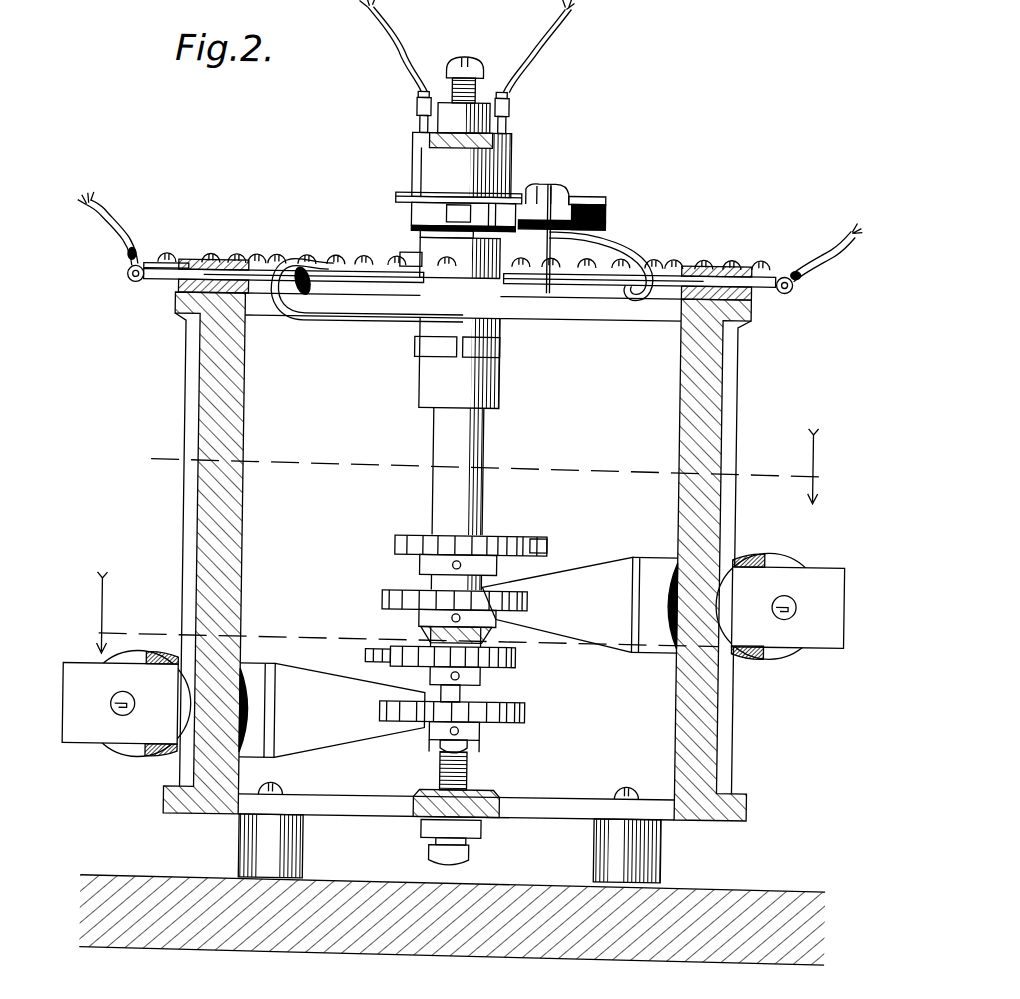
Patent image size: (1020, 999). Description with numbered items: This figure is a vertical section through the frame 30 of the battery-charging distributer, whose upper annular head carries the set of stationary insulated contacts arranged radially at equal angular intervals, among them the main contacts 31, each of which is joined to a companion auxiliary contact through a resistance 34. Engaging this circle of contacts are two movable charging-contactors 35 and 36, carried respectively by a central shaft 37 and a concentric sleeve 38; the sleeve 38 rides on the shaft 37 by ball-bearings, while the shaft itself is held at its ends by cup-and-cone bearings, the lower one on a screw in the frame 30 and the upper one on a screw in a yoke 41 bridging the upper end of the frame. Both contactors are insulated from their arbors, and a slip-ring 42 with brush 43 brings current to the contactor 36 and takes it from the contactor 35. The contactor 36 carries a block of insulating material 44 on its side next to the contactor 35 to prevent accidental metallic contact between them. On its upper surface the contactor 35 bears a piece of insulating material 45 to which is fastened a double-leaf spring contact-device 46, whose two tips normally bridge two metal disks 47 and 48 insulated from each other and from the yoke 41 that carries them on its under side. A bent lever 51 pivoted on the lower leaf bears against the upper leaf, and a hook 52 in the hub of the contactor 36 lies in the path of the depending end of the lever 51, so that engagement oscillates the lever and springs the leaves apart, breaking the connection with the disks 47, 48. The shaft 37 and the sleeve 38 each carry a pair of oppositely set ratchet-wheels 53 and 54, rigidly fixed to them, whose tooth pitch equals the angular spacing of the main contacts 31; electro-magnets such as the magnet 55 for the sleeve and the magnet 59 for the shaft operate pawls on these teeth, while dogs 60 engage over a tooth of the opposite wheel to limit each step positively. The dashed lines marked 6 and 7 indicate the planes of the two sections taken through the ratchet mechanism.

The frame 30 is at (228, 443).
The main contacts 31 is at (258, 278).
The resistance 34 is at (133, 286).
The charging-contactor 35 is at (618, 243).
The charging-contactor 36 is at (304, 296).
The shaft 37 is at (427, 225).
The sleeve 38 is at (440, 507).
The yoke 41 is at (492, 151).
The slip-ring 42 is at (423, 327).
The brush 43 is at (426, 343).
The block of insulating material 44 is at (290, 302).
The piece of insulating material 45 is at (594, 214).
The double-leaf spring contact-device 46 is at (560, 205).
The metal disk 47 is at (397, 193).
The metal disk 48 is at (391, 200).
The bent lever 51 is at (546, 202).
The hook 52 is at (396, 259).
The ratchet-wheels 53 is at (396, 542).
The ratchet-wheels 54 is at (383, 600).
The electro-magnet 55 is at (752, 556).
The electro-magnet 59 is at (152, 657).
The dogs 60 is at (540, 547).
The section line 6 is at (499, 462).
The section line 7 is at (397, 617).